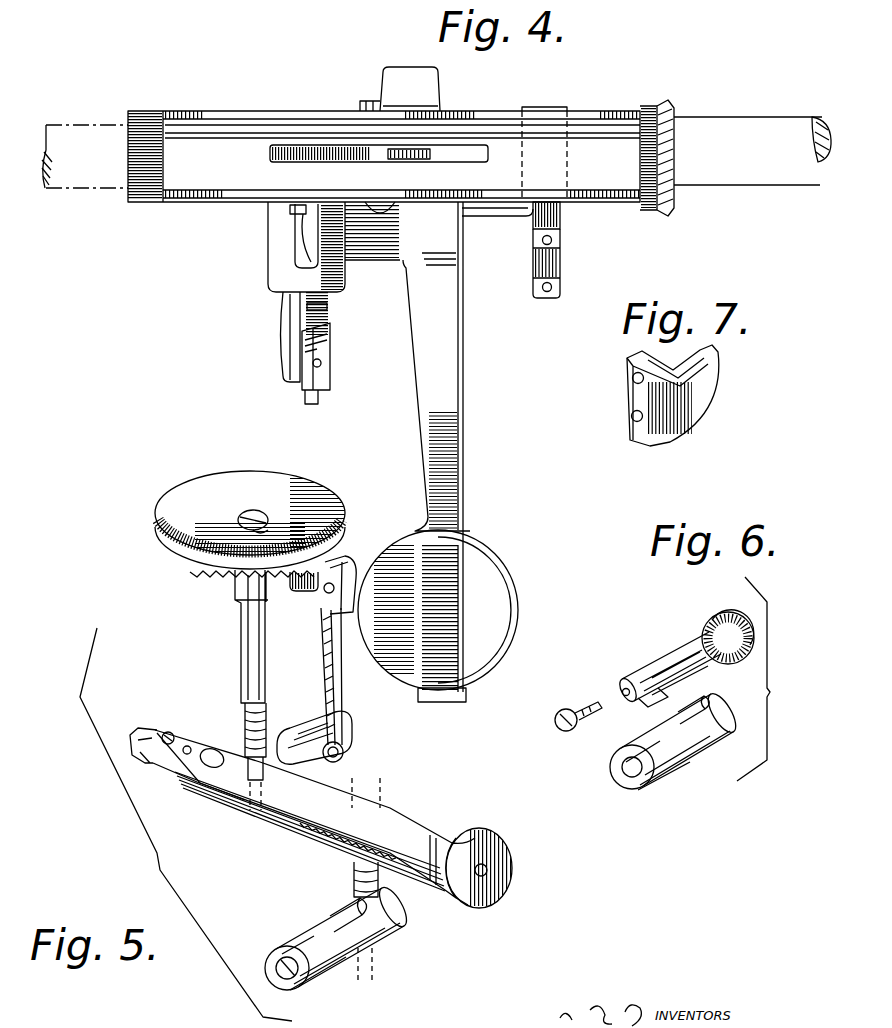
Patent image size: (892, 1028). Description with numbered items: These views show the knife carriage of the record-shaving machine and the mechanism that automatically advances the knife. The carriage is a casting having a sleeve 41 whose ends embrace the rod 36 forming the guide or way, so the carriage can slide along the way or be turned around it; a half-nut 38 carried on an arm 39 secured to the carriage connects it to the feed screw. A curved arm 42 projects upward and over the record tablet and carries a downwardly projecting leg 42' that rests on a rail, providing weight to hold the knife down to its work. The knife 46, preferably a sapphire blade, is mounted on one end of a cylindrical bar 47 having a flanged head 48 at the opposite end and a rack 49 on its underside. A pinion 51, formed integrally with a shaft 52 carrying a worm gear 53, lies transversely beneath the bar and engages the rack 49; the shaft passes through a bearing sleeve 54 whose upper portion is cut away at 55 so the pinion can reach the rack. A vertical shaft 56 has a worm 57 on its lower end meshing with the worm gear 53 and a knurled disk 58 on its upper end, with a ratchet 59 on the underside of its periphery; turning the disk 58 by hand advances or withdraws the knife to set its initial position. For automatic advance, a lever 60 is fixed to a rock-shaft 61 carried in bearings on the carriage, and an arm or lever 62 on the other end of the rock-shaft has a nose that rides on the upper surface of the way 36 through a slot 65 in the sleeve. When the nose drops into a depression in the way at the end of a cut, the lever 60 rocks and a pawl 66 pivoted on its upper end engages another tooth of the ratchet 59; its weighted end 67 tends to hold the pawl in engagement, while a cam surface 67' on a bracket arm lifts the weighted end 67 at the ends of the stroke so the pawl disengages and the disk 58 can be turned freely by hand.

In FIG. 4, the rod 36 is at (729, 128).
In FIG. 4, the half-nut 38 is at (571, 259).
In FIG. 4, the arm 39 is at (575, 212).
In FIG. 4, the sleeve 41 is at (593, 116).
In FIG. 4, the curved arm 42 is at (453, 452).
In FIG. 4, the downwardly projecting leg 42' is at (438, 621).
In FIG. 4, the knife 46 is at (303, 397).
In FIG. 5, the knife 46 is at (143, 735).
In FIG. 5, the bar 47 is at (253, 812).
In FIG. 5, the flanged head 48 is at (502, 848).
In FIG. 5, the rack 49 is at (305, 828).
In FIG. 6, the pinion 51 is at (672, 657).
In FIG. 5, the pinion 51 is at (366, 968).
In FIG. 6, the shaft 52 is at (638, 677).
In FIG. 6, the worm gear 53 is at (728, 612).
In FIG. 5, the worm gear 53 is at (402, 910).
In FIG. 6, the bearing sleeve 54 is at (661, 775).
In FIG. 6, the cut-away portion 55 is at (677, 733).
In FIG. 5, the cut-away portion 55 is at (322, 928).
In FIG. 5, the vertical shaft 56 is at (242, 657).
In FIG. 5, the worm 57 is at (264, 722).
In FIG. 5, the disk 58 is at (320, 498).
In FIG. 5, the ratchet 59 is at (218, 582).
In FIG. 5, the lever 60 is at (325, 653).
In FIG. 5, the rock-shaft 61 is at (323, 756).
In FIG. 4, the arm or lever 62 is at (400, 160).
In FIG. 5, the arm or lever 62 is at (348, 736).
In FIG. 4, the slot 65 is at (452, 152).
In FIG. 5, the pawl 66 is at (306, 592).
In FIG. 5, the weighted end 67 is at (355, 567).
In FIG. 7, the cam surface 67' is at (695, 395).